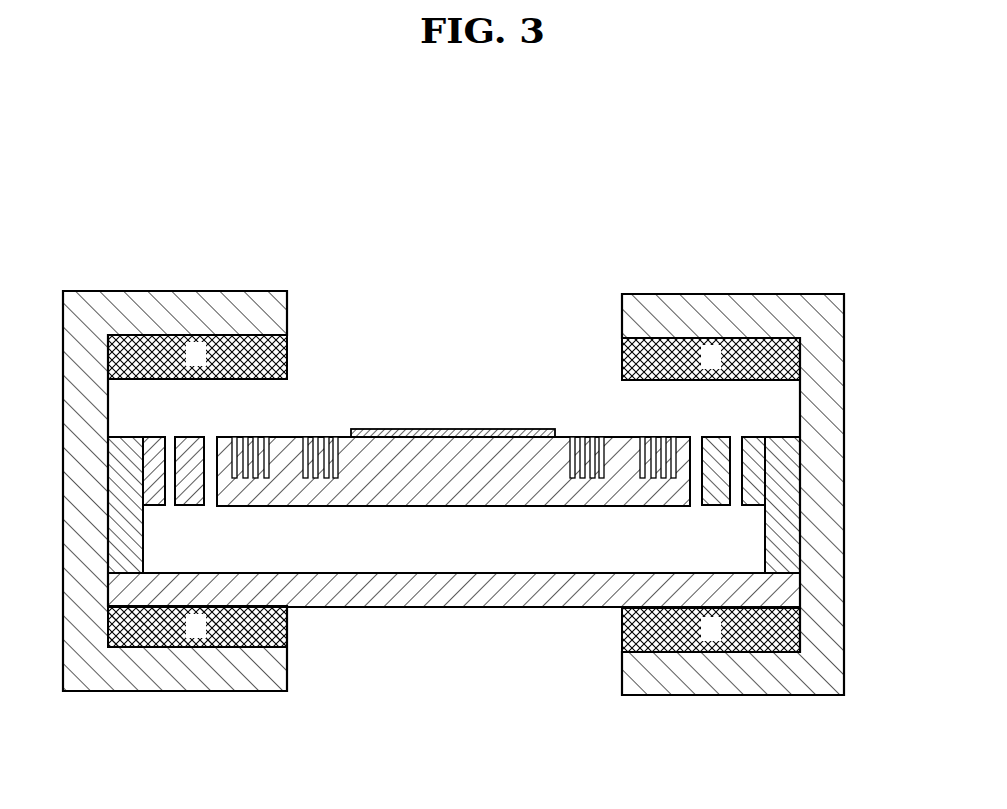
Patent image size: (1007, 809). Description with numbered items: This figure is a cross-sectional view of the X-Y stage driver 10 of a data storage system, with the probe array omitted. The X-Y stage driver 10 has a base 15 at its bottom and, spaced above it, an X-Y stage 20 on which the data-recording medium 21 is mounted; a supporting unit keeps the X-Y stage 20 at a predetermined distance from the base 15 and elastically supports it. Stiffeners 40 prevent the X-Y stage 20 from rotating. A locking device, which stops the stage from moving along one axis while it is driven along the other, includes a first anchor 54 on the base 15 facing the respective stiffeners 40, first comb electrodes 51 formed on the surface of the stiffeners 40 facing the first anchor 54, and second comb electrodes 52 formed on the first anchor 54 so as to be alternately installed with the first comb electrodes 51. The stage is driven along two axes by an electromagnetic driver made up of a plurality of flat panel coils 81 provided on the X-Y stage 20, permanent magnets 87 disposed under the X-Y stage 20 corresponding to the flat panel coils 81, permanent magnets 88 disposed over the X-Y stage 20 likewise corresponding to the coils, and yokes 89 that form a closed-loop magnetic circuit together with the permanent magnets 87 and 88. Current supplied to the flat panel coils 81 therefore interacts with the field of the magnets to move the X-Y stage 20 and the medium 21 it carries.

The X-Y stage driver 10 is at (485, 296).
The base 15 is at (475, 608).
The X-Y stage 20 is at (430, 492).
The medium 21 is at (463, 429).
The stiffeners 40 is at (193, 507).
The first comb electrodes 51 is at (165, 506).
The second comb electrodes 52 is at (163, 437).
The first anchor 54 is at (123, 560).
The flat panel coils 81 is at (636, 437).
The permanent magnets 87 is at (662, 653).
The permanent magnets 88 is at (678, 337).
The yokes 89 is at (845, 578).